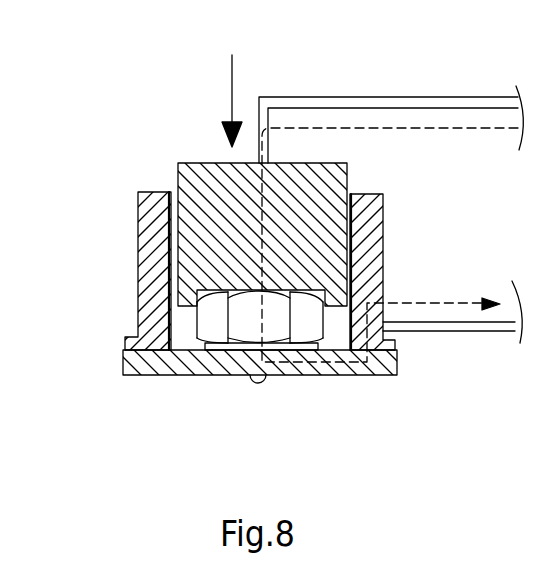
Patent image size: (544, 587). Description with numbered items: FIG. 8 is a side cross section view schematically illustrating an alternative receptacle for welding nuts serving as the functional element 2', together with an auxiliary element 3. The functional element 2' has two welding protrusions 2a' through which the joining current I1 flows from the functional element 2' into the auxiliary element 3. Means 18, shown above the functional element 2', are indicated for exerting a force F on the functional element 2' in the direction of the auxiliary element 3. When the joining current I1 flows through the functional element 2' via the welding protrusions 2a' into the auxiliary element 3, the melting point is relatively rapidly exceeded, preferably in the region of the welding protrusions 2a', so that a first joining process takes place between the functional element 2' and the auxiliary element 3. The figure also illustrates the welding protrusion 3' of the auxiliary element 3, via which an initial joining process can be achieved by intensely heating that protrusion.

The means for exerting force 18 is at (207, 227).
The functional element 2' is at (197, 322).
The welding protrusions 2a' is at (251, 396).
The welding protrusion 3' is at (249, 412).
The auxiliary element 3 is at (254, 399).
The joining current I1 is at (443, 128).
The pressing force F is at (224, 101).